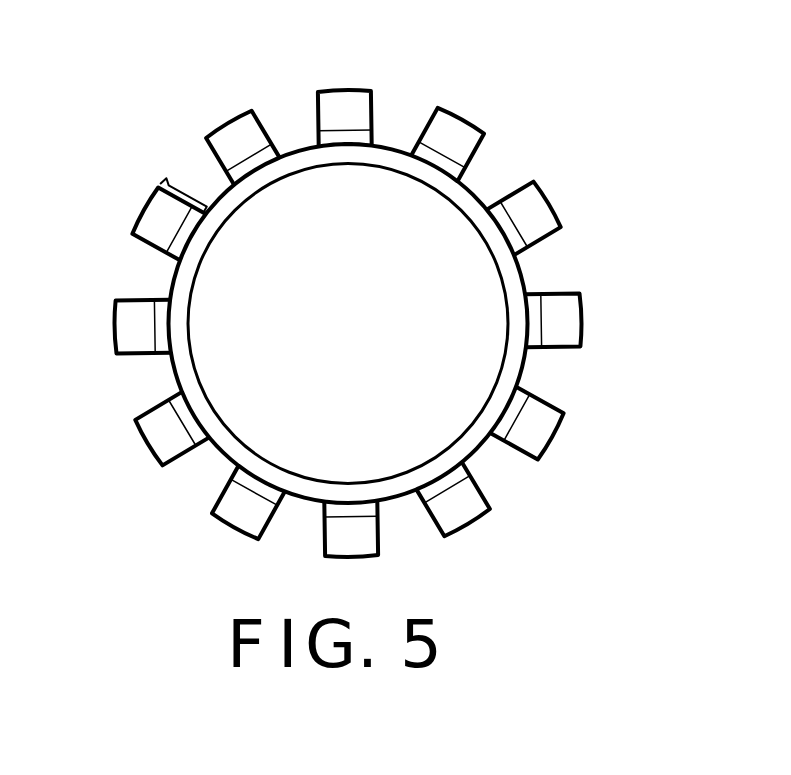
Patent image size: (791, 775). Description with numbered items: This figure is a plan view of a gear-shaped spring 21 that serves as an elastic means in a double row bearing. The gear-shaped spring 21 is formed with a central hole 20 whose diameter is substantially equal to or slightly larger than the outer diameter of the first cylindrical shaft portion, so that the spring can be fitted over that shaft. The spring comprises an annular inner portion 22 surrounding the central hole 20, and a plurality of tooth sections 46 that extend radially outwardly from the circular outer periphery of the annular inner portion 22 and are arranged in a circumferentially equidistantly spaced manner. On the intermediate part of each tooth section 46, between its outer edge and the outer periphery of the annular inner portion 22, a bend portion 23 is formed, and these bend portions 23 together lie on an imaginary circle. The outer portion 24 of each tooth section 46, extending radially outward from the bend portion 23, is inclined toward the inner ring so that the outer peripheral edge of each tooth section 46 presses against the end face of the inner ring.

The central hole 20 is at (318, 165).
The gear-shaped spring 21 is at (382, 287).
The annular inner portion 22 is at (236, 449).
The bend portion 23 is at (440, 150).
The outer portion 24 is at (338, 108).
The tooth section 46 is at (188, 182).